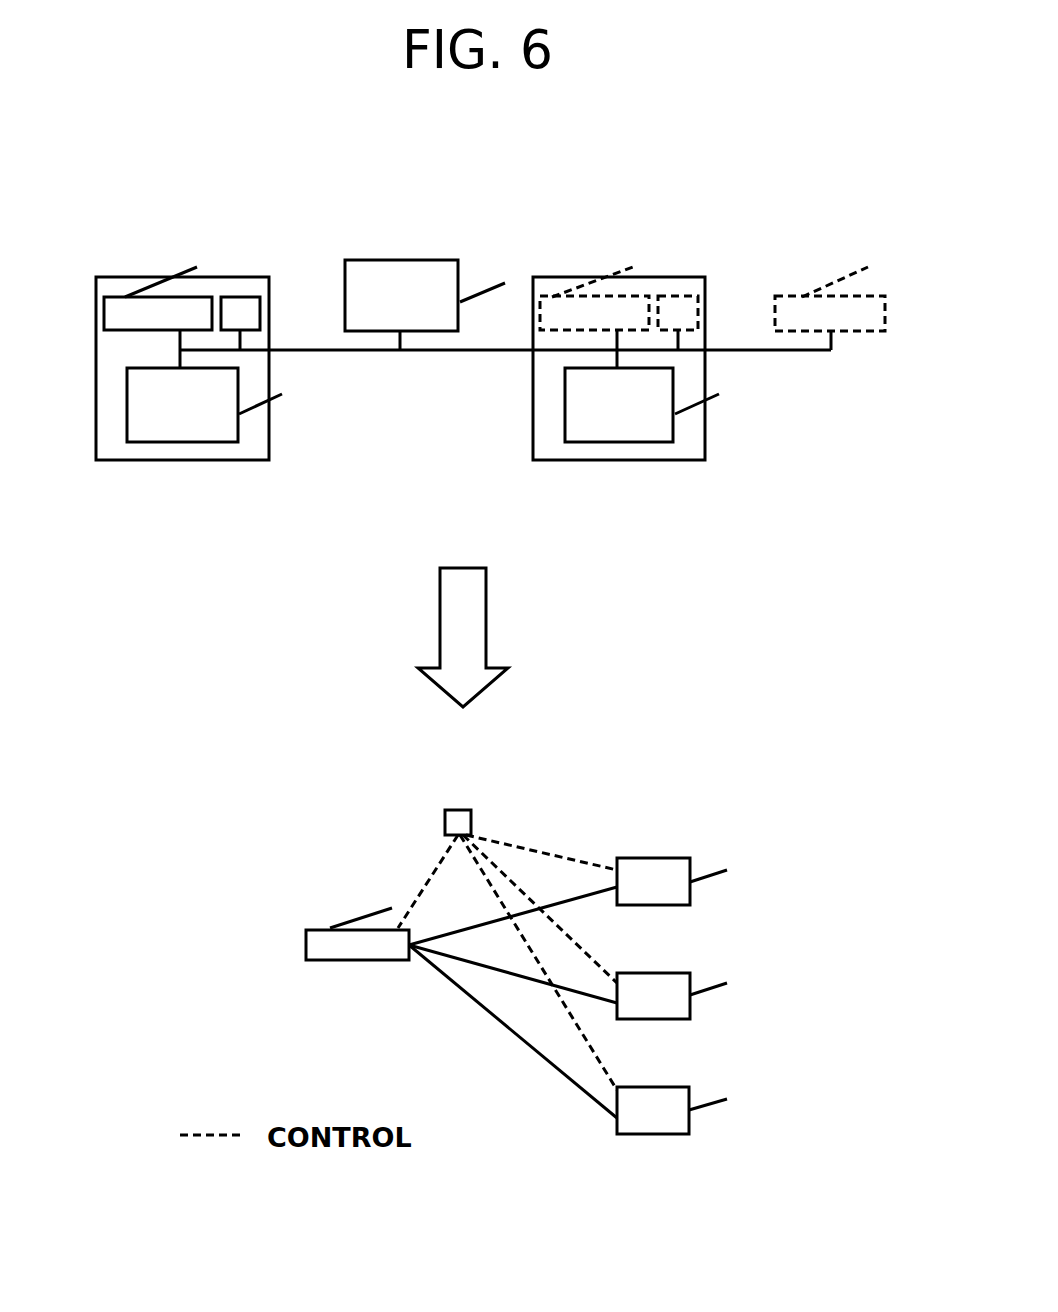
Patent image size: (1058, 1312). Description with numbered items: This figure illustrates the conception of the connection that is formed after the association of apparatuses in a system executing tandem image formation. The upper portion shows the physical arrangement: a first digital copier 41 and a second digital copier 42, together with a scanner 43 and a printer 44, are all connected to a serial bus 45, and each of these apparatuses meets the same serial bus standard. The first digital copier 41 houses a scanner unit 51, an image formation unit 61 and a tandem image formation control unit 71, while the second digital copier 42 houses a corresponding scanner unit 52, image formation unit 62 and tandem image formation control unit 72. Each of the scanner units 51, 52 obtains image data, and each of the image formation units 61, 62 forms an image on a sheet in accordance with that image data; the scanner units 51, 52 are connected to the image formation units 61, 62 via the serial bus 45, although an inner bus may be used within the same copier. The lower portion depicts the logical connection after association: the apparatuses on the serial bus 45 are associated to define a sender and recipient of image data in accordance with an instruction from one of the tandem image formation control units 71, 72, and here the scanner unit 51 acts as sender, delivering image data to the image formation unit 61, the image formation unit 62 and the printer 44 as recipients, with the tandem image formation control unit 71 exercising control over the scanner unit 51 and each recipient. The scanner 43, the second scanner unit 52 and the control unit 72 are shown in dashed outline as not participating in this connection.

The first digital copier 41 is at (236, 261).
The second digital copier 42 is at (673, 261).
The scanner 43 is at (865, 296).
The printer 44 is at (400, 260).
The IEEE1394 serial bus 45 is at (800, 352).
The scanner unit 51 is at (112, 296).
The scanner unit 52 is at (540, 296).
The image formation unit 61 is at (127, 403).
The image formation unit 62 is at (565, 410).
The tandem image formation control unit 71 is at (248, 296).
The tandem image formation control unit 72 is at (683, 296).